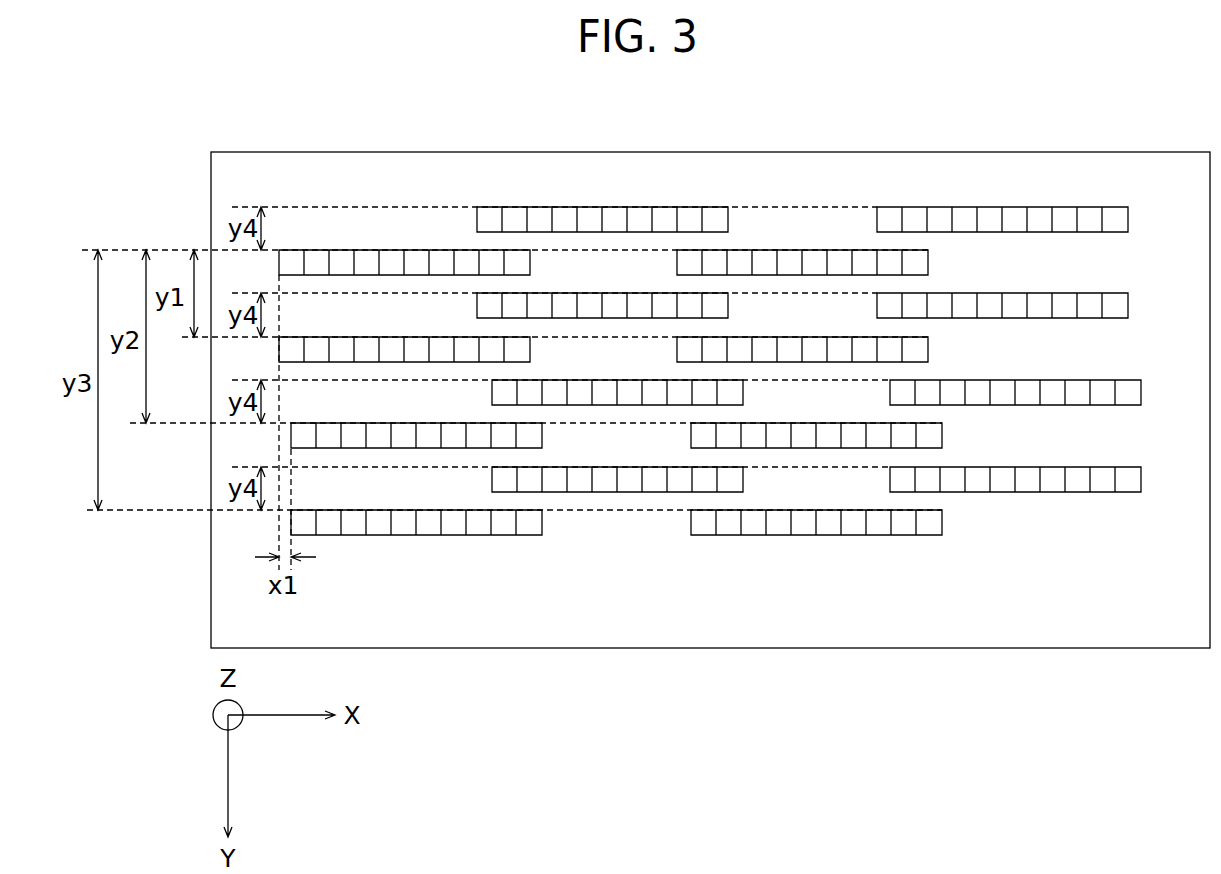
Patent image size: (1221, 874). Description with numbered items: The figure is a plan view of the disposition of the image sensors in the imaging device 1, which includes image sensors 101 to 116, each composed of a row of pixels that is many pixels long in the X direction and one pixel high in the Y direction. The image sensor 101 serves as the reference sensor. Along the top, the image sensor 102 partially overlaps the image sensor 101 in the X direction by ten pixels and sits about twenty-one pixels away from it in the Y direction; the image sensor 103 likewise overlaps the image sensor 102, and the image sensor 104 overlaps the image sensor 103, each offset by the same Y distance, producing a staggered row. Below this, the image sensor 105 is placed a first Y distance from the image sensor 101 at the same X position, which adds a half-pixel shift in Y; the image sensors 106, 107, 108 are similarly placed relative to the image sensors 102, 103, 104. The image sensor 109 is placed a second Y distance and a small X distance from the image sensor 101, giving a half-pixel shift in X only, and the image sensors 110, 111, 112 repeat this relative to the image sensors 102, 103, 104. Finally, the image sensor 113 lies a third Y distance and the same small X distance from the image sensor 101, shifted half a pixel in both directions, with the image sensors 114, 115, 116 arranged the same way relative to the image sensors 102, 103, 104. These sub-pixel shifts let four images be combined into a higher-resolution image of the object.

The imaging device 1 is at (1101, 149).
The image sensor 101 is at (365, 248).
The image sensor 102 is at (568, 205).
The image sensor 103 is at (765, 248).
The image sensor 104 is at (968, 205).
The image sensor 105 is at (365, 337).
The image sensor 106 is at (570, 292).
The image sensor 107 is at (760, 335).
The image sensor 108 is at (968, 292).
The image sensor 109 is at (378, 422).
The image sensor 110 is at (577, 378).
The image sensor 111 is at (775, 422).
The image sensor 112 is at (980, 380).
The image sensor 113 is at (378, 508).
The image sensor 114 is at (577, 465).
The image sensor 115 is at (775, 508).
The image sensor 116 is at (980, 467).